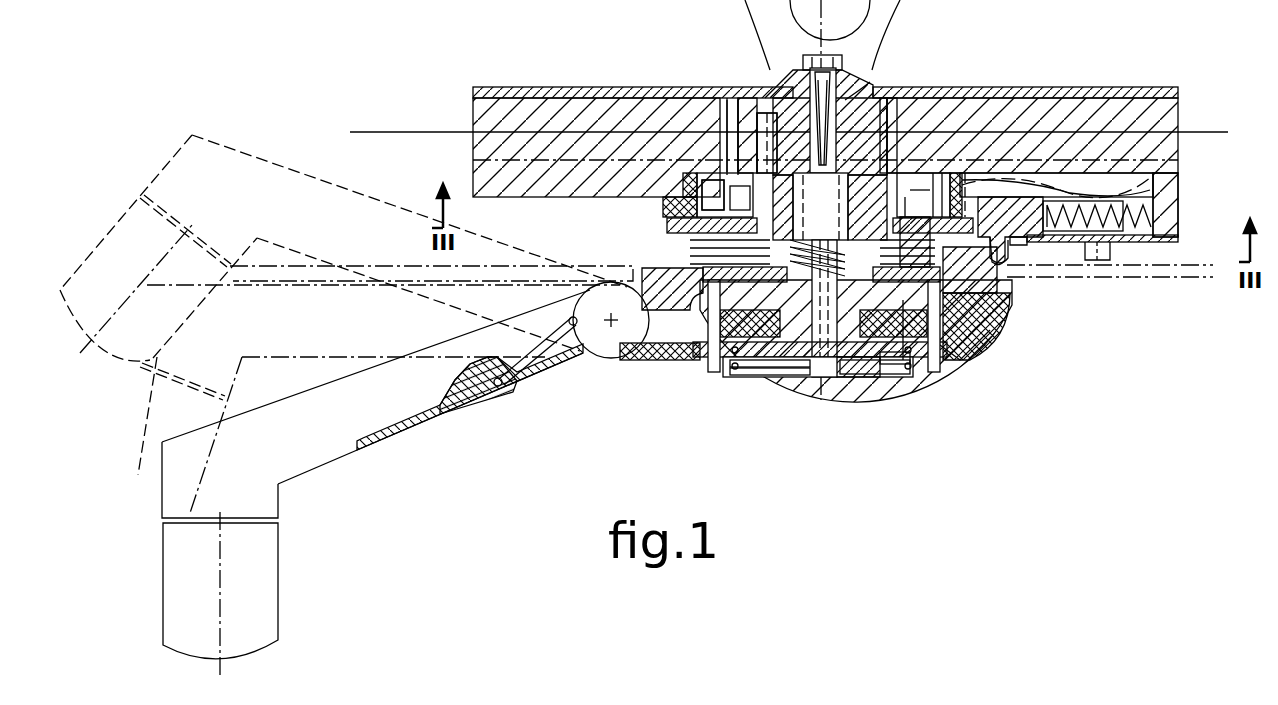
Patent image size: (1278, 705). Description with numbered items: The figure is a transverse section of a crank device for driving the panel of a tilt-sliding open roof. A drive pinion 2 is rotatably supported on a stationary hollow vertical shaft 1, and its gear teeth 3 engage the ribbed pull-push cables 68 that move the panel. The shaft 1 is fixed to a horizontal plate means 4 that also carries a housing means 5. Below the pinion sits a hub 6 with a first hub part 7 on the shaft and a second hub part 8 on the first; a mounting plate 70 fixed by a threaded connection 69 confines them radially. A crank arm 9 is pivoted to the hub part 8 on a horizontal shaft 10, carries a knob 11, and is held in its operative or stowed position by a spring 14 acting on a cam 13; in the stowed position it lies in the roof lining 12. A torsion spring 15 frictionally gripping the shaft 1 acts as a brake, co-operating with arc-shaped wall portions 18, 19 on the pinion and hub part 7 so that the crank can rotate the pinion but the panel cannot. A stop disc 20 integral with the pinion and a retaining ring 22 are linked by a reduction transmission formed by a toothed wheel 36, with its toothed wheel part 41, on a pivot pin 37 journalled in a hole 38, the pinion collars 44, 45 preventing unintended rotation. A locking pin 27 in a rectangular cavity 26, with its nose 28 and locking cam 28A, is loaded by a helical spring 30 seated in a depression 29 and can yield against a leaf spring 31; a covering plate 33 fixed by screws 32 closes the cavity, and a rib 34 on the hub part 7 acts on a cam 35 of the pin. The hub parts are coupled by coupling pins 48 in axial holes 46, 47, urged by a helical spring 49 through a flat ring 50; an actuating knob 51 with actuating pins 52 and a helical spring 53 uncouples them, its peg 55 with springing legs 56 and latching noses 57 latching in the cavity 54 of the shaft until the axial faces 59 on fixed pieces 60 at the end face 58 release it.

The stationary hollow vertical shaft 1 is at (895, 90).
The drive pinion 2 is at (905, 95).
The gear teeth 3 is at (940, 90).
The horizontal plate means 4 is at (1035, 92).
The housing means 5 is at (1085, 112).
The hub 6 is at (1003, 350).
The first hub part 7 is at (985, 320).
The second hub part 8 is at (970, 345).
The crank arm 9 is at (403, 430).
The horizontal shaft 10 is at (618, 325).
The knob 11 is at (263, 594).
The roof lining 12 is at (423, 268).
The cam 13 is at (478, 380).
The spring 14 is at (530, 375).
The torsion spring 15 is at (775, 365).
The arc-shaped wall portion 18 is at (735, 357).
The arc-shaped wall portion 19 is at (890, 360).
The stop disc 20 is at (697, 212).
The retaining ring 22 is at (664, 205).
The rectangular cavity 26 is at (1140, 195).
The locking pin 27 is at (1040, 225).
The nose 28 is at (958, 180).
The locking cam 28A is at (968, 200).
The depression 29 is at (1108, 255).
The helical spring 30 is at (1165, 215).
The leaf spring 31 is at (1155, 178).
The screws 32 is at (1100, 230).
The covering plate 33 is at (1140, 240).
The rib 34 is at (1005, 262).
The cam 35 is at (1020, 245).
The toothed wheel 36 is at (680, 185).
The pivot pin 37 is at (735, 180).
The hole 38 is at (747, 175).
The toothed wheel part 41 is at (700, 190).
The collar 44 is at (710, 195).
The collar 45 is at (916, 196).
The axial holes 46 is at (990, 290).
The axial holes 47 is at (920, 335).
The coupling pin 48 is at (672, 345).
The helical spring 49 is at (700, 245).
The flat ring 50 is at (680, 238).
The actuating knob 51 is at (915, 365).
The actuating pins 52 is at (712, 355).
The helical spring 53 is at (865, 378).
The cavity 54 is at (808, 56).
The peg 55 is at (832, 375).
The springing legs 56 is at (773, 160).
The latching nose 57 is at (775, 180).
The end face 58 is at (800, 100).
The axial faces 59 is at (830, 70).
The fixed pieces 60 is at (855, 95).
The pull-push cables 68 is at (789, 119).
The threaded connection 69 is at (798, 378).
The mounting plate 70 is at (768, 378).